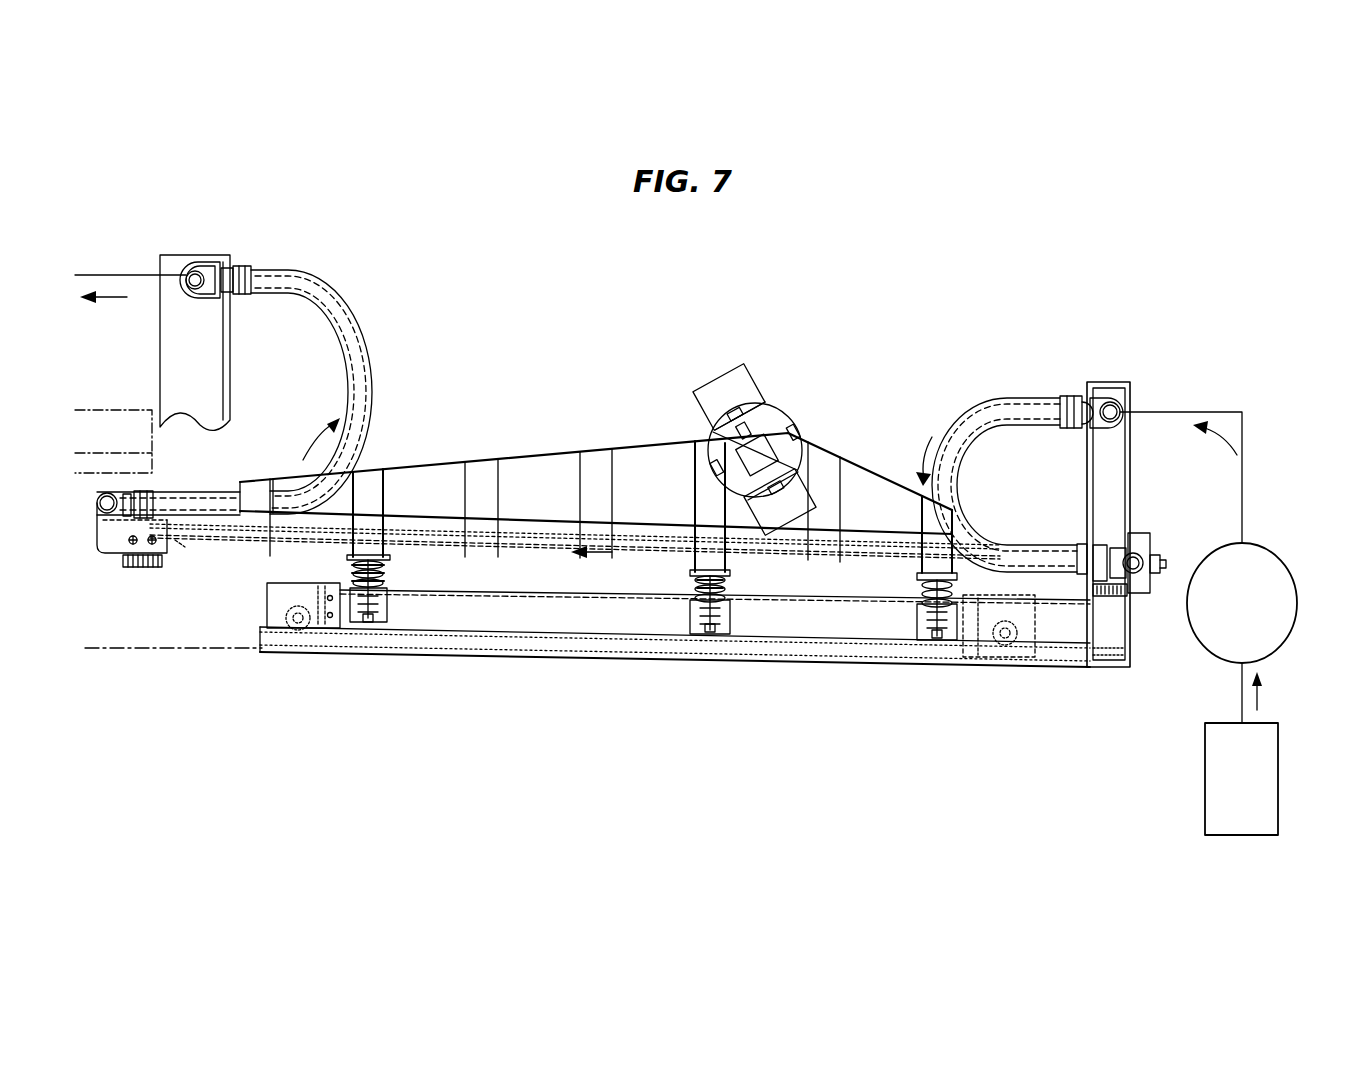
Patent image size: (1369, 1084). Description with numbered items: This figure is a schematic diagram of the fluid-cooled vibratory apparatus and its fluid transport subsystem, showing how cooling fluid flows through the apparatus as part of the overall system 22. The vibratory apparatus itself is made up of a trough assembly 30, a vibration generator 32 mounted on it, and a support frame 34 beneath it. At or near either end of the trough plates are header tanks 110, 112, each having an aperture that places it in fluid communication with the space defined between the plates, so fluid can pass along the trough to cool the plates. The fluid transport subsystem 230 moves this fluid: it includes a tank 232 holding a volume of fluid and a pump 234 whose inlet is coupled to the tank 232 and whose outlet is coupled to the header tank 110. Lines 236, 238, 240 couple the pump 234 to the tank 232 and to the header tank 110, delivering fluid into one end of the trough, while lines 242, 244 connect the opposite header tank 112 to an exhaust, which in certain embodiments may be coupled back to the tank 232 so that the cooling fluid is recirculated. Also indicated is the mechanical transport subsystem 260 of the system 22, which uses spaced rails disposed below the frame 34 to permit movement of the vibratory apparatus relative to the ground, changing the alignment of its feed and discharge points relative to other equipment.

The system 22 is at (1100, 300).
The trough assembly 30 is at (538, 463).
The vibration generator 32 is at (797, 423).
The support frame 34 is at (480, 610).
The header tank 110 is at (1142, 585).
The header tank 112 is at (103, 533).
The fluid transport subsystem 230 is at (1290, 694).
The tank 232 is at (1268, 782).
The pump 234 is at (1265, 560).
The line 236 is at (1240, 690).
The line 238 is at (1202, 413).
The line 240 is at (947, 487).
The line 242 is at (363, 384).
The line 244 is at (117, 277).
The mechanical transport subsystem 260 is at (240, 620).